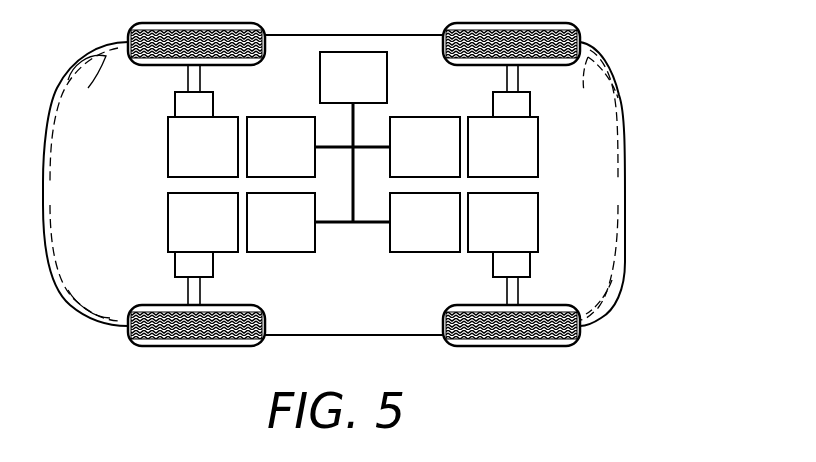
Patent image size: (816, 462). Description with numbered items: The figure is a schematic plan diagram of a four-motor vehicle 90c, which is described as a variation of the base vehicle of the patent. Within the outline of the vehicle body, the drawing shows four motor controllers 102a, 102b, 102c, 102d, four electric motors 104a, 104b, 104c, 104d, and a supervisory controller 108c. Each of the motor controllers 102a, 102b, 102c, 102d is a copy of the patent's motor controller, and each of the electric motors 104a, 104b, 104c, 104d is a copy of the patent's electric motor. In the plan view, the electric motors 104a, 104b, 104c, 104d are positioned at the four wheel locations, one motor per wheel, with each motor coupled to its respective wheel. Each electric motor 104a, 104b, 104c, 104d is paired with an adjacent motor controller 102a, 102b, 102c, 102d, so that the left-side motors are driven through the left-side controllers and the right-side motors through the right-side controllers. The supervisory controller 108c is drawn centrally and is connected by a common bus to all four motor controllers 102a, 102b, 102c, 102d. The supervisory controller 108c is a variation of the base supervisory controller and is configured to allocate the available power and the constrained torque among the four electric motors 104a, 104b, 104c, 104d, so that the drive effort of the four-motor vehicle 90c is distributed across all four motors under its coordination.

The four-motor vehicle 90c is at (628, 123).
The motor controller 102a is at (254, 157).
The motor controller 102b is at (254, 234).
The motor controller 102c is at (398, 157).
The motor controller 102d is at (398, 234).
The electric motor 104a is at (176, 157).
The electric motor 104b is at (176, 234).
The electric motor 104c is at (476, 157).
The electric motor 104d is at (476, 234).
The supervisory controller 108c is at (326, 88).